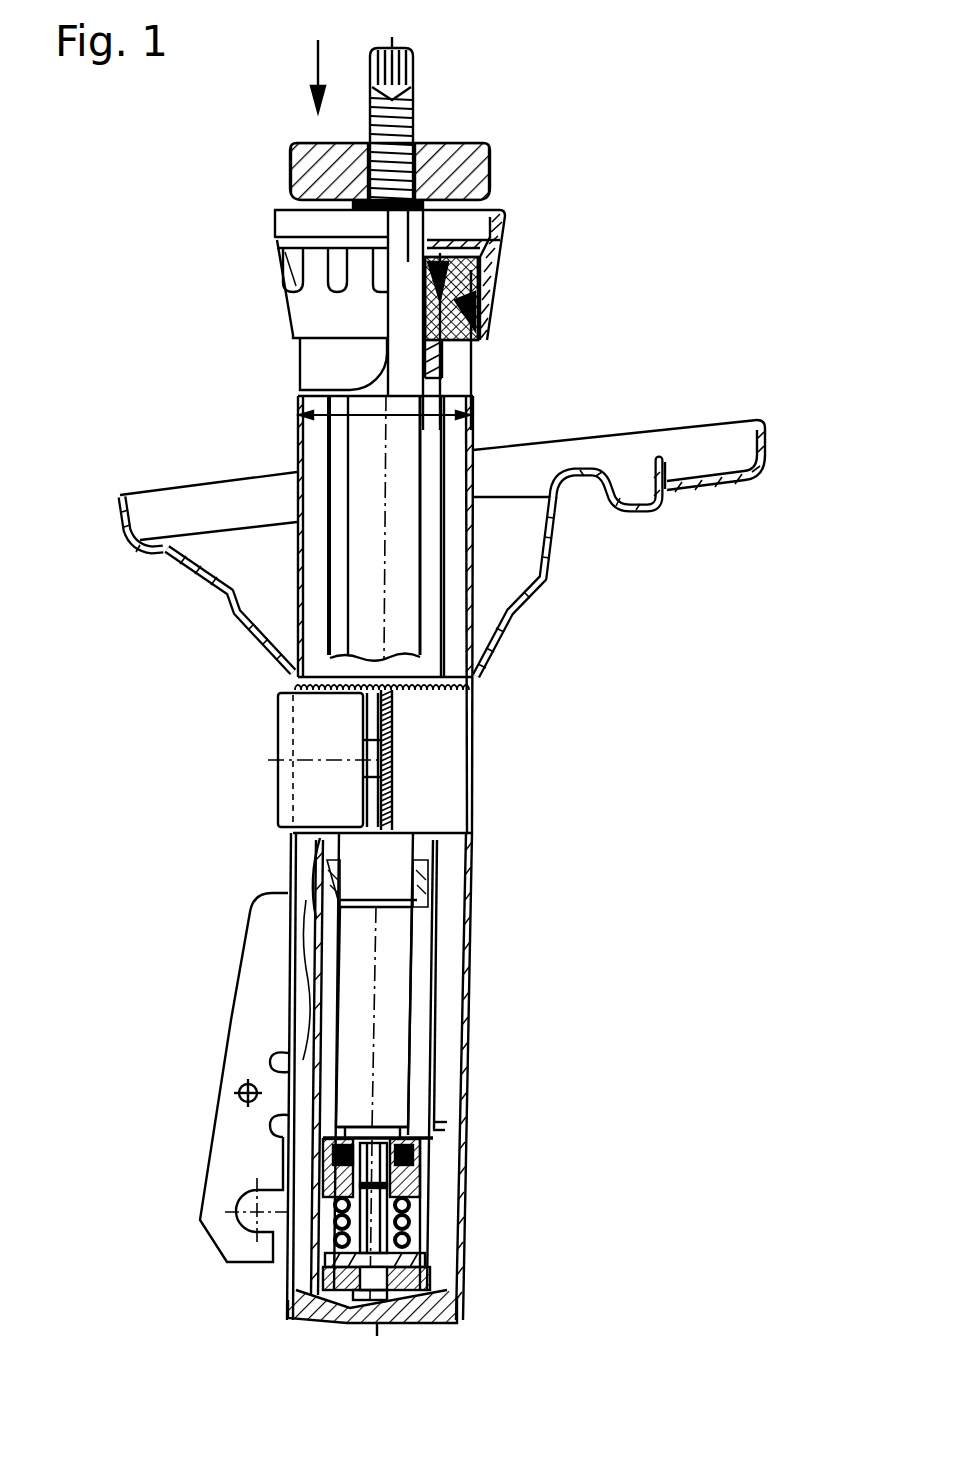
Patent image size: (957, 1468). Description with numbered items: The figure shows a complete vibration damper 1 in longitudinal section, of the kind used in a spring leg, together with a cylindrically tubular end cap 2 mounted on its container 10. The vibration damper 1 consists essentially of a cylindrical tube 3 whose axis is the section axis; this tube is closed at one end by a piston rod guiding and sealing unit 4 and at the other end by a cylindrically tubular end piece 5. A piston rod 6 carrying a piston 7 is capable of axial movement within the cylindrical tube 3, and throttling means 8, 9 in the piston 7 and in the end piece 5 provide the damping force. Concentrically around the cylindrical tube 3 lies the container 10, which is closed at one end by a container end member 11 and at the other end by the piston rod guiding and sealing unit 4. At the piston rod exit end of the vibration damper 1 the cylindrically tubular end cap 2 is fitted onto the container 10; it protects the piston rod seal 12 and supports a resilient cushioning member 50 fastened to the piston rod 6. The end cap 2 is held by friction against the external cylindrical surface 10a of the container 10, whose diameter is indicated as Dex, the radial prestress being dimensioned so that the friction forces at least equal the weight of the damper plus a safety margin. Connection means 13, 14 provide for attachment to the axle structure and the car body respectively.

The vibration damper 1 is at (464, 685).
The cylindrically tubular end cap 2 is at (432, 280).
The cylindrical tube 3 is at (440, 963).
The piston rod guiding and sealing unit 4 is at (478, 345).
The cylindrically tubular end piece 5 is at (445, 1290).
The piston rod 6 is at (402, 1043).
The piston 7 is at (433, 1150).
The throttling means 8 is at (432, 1278).
The throttling means 9 is at (434, 1197).
The container 10 is at (470, 627).
The external cylindrical surface 10a is at (297, 340).
The container end member 11 is at (447, 1296).
The piston rod seal 12 is at (478, 238).
The connection means 13 is at (236, 1062).
The connection means 14 is at (412, 128).
The resilient cushioning member 50 is at (290, 158).
The outer diameter Dex is at (377, 420).